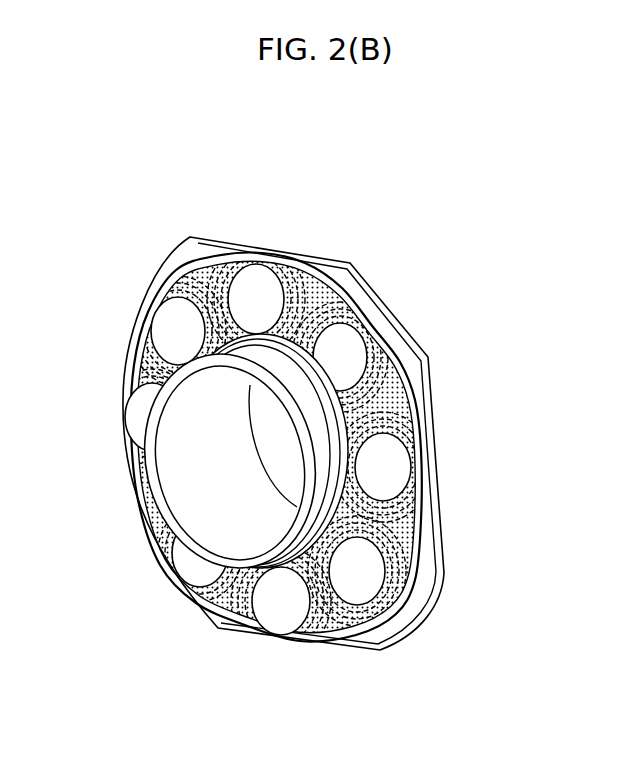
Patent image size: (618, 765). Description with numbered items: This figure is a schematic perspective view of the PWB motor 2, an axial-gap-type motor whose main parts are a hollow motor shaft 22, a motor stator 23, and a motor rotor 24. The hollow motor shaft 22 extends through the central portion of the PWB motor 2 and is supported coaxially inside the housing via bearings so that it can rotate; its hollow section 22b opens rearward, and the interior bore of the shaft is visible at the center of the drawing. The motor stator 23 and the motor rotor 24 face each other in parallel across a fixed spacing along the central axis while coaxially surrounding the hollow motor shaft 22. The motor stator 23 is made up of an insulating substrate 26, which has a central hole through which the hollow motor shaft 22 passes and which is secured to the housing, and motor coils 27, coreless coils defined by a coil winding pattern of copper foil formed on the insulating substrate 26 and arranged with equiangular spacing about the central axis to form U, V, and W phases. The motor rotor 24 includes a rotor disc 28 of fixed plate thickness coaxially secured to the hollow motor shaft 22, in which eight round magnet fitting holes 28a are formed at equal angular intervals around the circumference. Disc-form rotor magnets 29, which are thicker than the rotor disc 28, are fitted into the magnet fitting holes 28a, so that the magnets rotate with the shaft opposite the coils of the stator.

The PWB motor 2 is at (124, 240).
The hollow motor shaft 22 is at (148, 494).
The hollow section 22b is at (237, 481).
The motor stator 23 is at (397, 177).
The motor rotor 24 is at (530, 347).
The insulating substrate 26 is at (380, 280).
The motor coils 27 is at (345, 280).
The rotor disc 28 is at (420, 413).
The magnet fitting holes 28a is at (398, 376).
The rotor magnets 29 is at (403, 469).